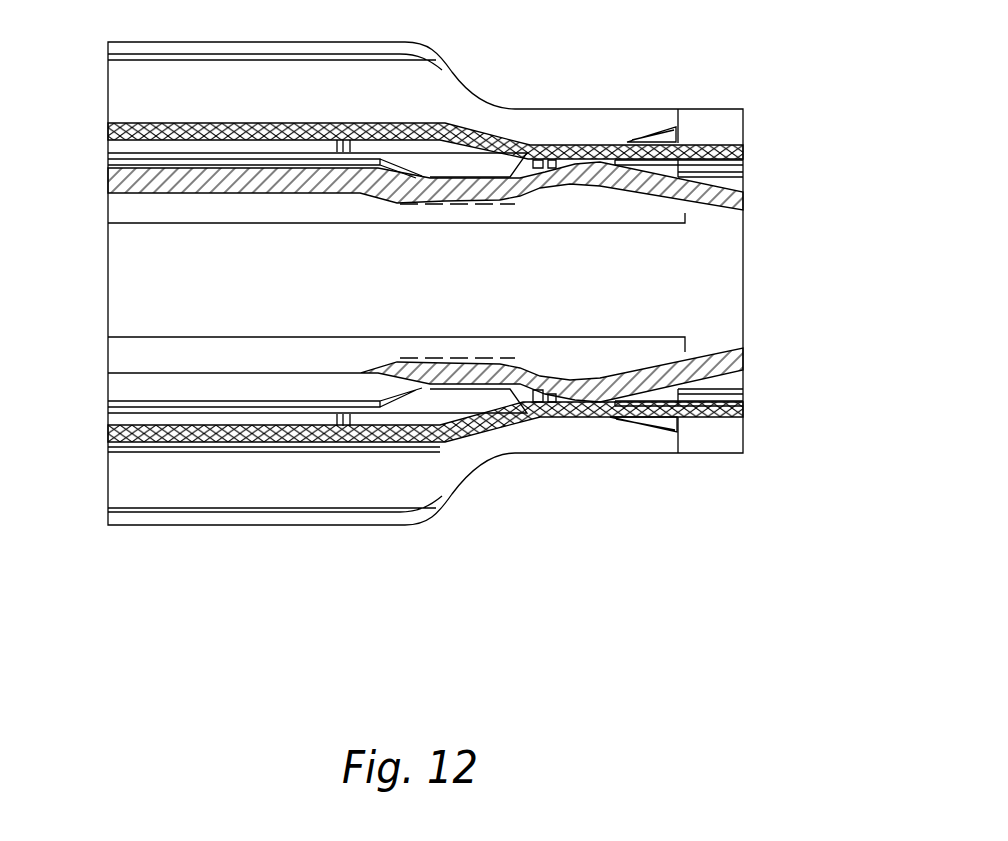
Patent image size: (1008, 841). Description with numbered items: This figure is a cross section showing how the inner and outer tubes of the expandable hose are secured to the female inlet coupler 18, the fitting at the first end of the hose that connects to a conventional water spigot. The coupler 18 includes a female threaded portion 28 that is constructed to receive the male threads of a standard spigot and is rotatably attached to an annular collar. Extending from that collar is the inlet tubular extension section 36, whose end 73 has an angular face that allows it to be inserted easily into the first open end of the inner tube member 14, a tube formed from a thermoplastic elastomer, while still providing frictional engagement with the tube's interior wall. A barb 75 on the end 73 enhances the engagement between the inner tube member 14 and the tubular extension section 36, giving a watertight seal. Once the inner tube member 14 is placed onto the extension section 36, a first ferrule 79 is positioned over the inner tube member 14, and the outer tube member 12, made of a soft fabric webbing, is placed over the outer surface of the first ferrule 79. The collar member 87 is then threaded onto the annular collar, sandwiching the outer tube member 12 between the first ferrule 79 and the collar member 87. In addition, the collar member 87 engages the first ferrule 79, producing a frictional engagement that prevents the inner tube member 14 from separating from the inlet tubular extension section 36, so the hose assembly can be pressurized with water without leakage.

The outer tube member 12 is at (603, 418).
The inner tube member 14 is at (720, 370).
The female inlet coupler 18 is at (263, 493).
The female threaded portion 28 is at (130, 302).
The inlet tubular extension section 36 is at (630, 358).
The end 73 is at (685, 218).
The barb 75 is at (556, 162).
The first ferrule 79 is at (437, 408).
The collar member 87 is at (356, 525).